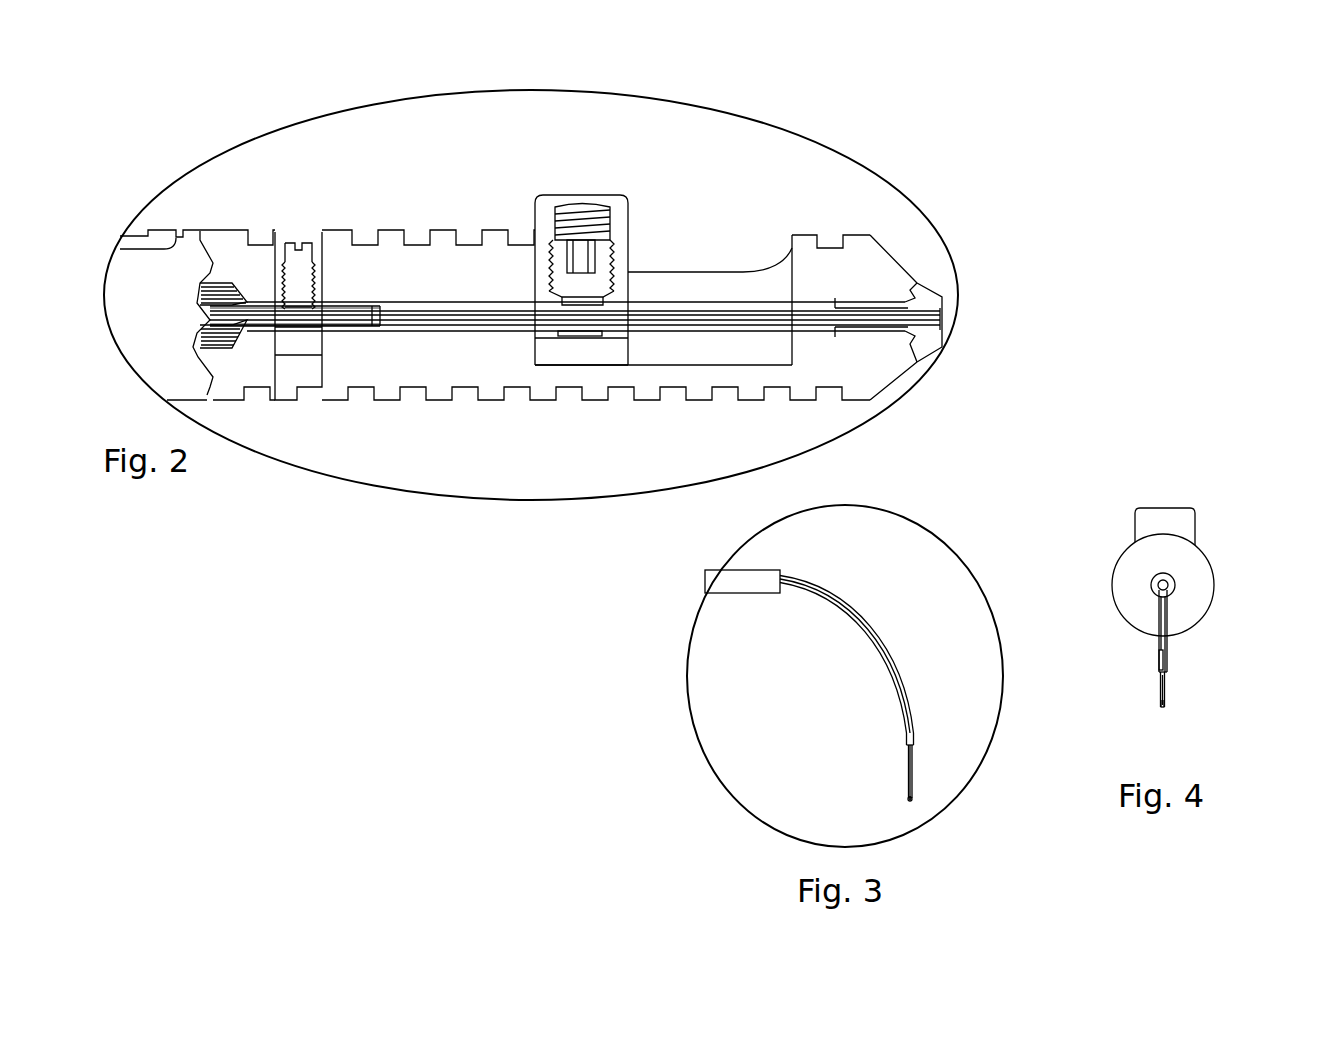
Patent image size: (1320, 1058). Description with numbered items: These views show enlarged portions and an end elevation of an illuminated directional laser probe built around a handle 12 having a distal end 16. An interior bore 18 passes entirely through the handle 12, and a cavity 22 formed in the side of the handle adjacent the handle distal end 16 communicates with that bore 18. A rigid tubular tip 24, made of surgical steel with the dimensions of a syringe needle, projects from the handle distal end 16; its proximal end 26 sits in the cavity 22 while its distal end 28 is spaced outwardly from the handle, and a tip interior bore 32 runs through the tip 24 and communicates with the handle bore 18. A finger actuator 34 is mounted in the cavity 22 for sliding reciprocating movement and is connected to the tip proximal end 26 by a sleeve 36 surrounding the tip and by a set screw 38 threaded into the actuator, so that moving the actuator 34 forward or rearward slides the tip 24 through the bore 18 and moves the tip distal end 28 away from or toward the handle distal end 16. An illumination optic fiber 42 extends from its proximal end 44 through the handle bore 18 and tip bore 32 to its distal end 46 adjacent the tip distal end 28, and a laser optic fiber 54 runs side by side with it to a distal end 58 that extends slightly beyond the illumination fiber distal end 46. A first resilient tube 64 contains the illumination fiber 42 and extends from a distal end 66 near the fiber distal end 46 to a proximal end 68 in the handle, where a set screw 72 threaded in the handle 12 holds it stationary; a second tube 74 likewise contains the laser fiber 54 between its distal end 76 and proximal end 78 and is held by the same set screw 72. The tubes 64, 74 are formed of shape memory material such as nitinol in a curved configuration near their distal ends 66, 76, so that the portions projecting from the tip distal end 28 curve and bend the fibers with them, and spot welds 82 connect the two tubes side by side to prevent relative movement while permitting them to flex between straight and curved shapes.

In FIG. 2, the handle 12 is at (141, 280).
In FIG. 4, the handle 12 is at (1117, 565).
In FIG. 2, the handle distal end 16 is at (900, 262).
In FIG. 2, the handle interior bore 18 is at (433, 302).
In FIG. 2, the cavity 22 is at (713, 272).
In FIG. 2, the rigid tubular tip 24 is at (951, 322).
In FIG. 2, the tip proximal end 26 is at (533, 307).
In FIG. 3, the tip distal end 28 is at (782, 573).
In FIG. 4, the tip distal end 28 is at (1168, 585).
In FIG. 2, the tip interior bore 32 is at (813, 312).
In FIG. 2, the finger actuator 34 is at (637, 218).
In FIG. 4, the finger actuator 34 is at (1148, 522).
In FIG. 2, the sleeve 36 is at (627, 340).
In FIG. 2, the set screw 38 is at (583, 212).
In FIG. 2, the illumination optic fiber 42 is at (472, 312).
In FIG. 3, the illumination optic fiber 42 is at (915, 750).
In FIG. 4, the illumination optic fiber 42 is at (1162, 672).
In FIG. 4, the illumination optic fiber proximal end 44 is at (1167, 674).
In FIG. 3, the illumination optic fiber distal end 46 is at (915, 753).
In FIG. 2, the laser optic fiber 54 is at (452, 314).
In FIG. 3, the laser optic fiber 54 is at (909, 801).
In FIG. 4, the laser optic fiber 54 is at (1160, 707).
In FIG. 3, the laser optic fiber distal end 58 is at (911, 801).
In FIG. 4, the laser optic fiber distal end 58 is at (1162, 708).
In FIG. 2, the first resilient tube 64 is at (490, 318).
In FIG. 3, the first resilient tube 64 is at (893, 657).
In FIG. 4, the first resilient tube 64 is at (1170, 643).
In FIG. 3, the first tube distal end 66 is at (915, 745).
In FIG. 4, the first tube distal end 66 is at (1168, 673).
In FIG. 2, the first tube proximal end 68 is at (236, 290).
In FIG. 2, the set screw 72 is at (300, 265).
In FIG. 2, the second tube 74 is at (392, 318).
In FIG. 3, the second tube 74 is at (893, 680).
In FIG. 4, the second tube 74 is at (1159, 641).
In FIG. 3, the second tube distal end 76 is at (912, 800).
In FIG. 4, the second tube distal end 76 is at (1164, 708).
In FIG. 2, the second tube proximal end 78 is at (224, 330).
In FIG. 4, the spot welds 82 is at (1159, 661).